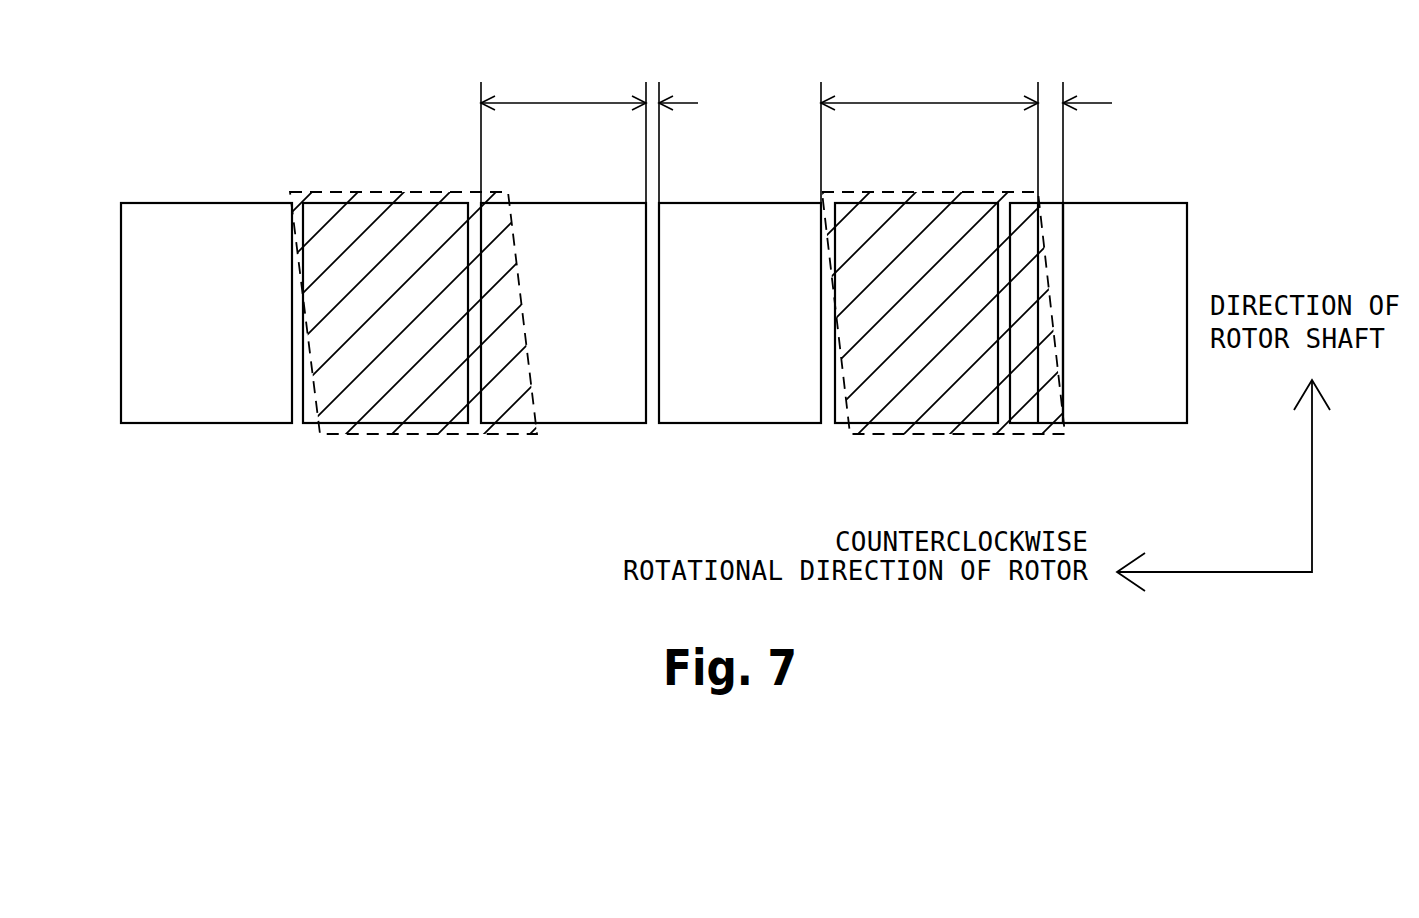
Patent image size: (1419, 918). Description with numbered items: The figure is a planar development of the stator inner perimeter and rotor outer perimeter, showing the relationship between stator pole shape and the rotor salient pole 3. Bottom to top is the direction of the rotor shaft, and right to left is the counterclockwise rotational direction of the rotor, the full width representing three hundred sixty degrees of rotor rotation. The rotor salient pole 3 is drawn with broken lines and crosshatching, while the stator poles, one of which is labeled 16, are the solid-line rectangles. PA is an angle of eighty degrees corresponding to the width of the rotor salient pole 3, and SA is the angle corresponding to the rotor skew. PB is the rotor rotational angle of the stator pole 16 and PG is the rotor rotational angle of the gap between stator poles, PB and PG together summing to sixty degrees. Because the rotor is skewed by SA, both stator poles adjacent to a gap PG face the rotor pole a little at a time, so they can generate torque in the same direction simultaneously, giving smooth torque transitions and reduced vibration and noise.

The rotor salient pole 3 is at (387, 434).
The stator pole tooth 16 is at (565, 424).
The pole width of the rotor salient pole PA is at (929, 133).
The rotor rotational angle of the stator pole PB is at (563, 135).
The gap between the stator poles PG is at (667, 126).
The skew angle of the rotor SA is at (1072, 126).